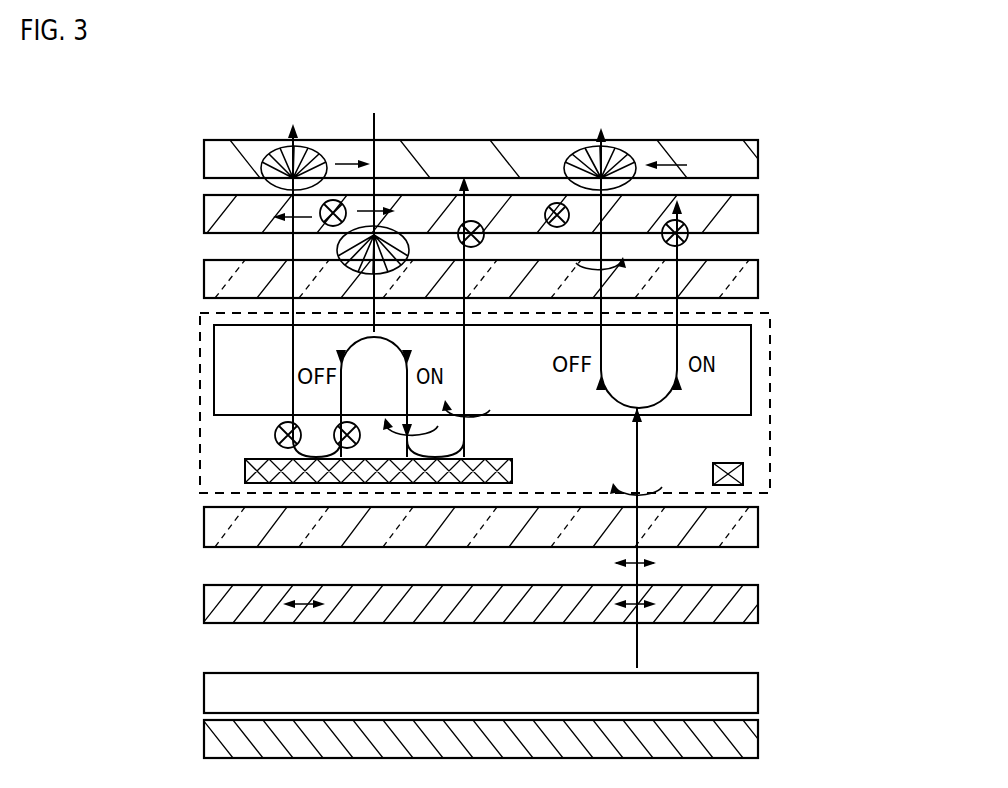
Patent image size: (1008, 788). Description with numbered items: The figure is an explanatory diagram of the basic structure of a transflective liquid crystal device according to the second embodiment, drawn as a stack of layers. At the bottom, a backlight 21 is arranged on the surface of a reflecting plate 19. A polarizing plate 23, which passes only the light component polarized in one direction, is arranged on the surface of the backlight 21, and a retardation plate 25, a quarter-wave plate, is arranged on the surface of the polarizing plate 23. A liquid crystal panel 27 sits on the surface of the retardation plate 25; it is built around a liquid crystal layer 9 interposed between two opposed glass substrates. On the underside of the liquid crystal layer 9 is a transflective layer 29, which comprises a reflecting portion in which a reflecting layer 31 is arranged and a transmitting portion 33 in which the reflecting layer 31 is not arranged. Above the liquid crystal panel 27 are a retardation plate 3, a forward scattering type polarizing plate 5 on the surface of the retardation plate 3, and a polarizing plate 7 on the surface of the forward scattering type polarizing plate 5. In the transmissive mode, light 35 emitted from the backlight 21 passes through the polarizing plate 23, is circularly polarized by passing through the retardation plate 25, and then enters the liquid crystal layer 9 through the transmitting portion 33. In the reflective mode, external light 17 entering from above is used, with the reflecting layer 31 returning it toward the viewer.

The retardation plate 3 is at (758, 283).
The forward scattering type polarizing plate 5 is at (758, 218).
The polarizing plate 7 is at (758, 167).
The liquid crystal layer 9 is at (751, 369).
The external light 17 is at (374, 127).
The reflecting plate 19 is at (758, 738).
The backlight 21 is at (758, 695).
The polarizing plate 23 is at (758, 603).
The retardation plate 25 is at (758, 530).
The liquid crystal panel 27 is at (770, 427).
The transflective layer 29 is at (862, 447).
The reflecting layer 31 is at (512, 481).
The transmitting portion 33 is at (743, 482).
The light 35 is at (640, 573).